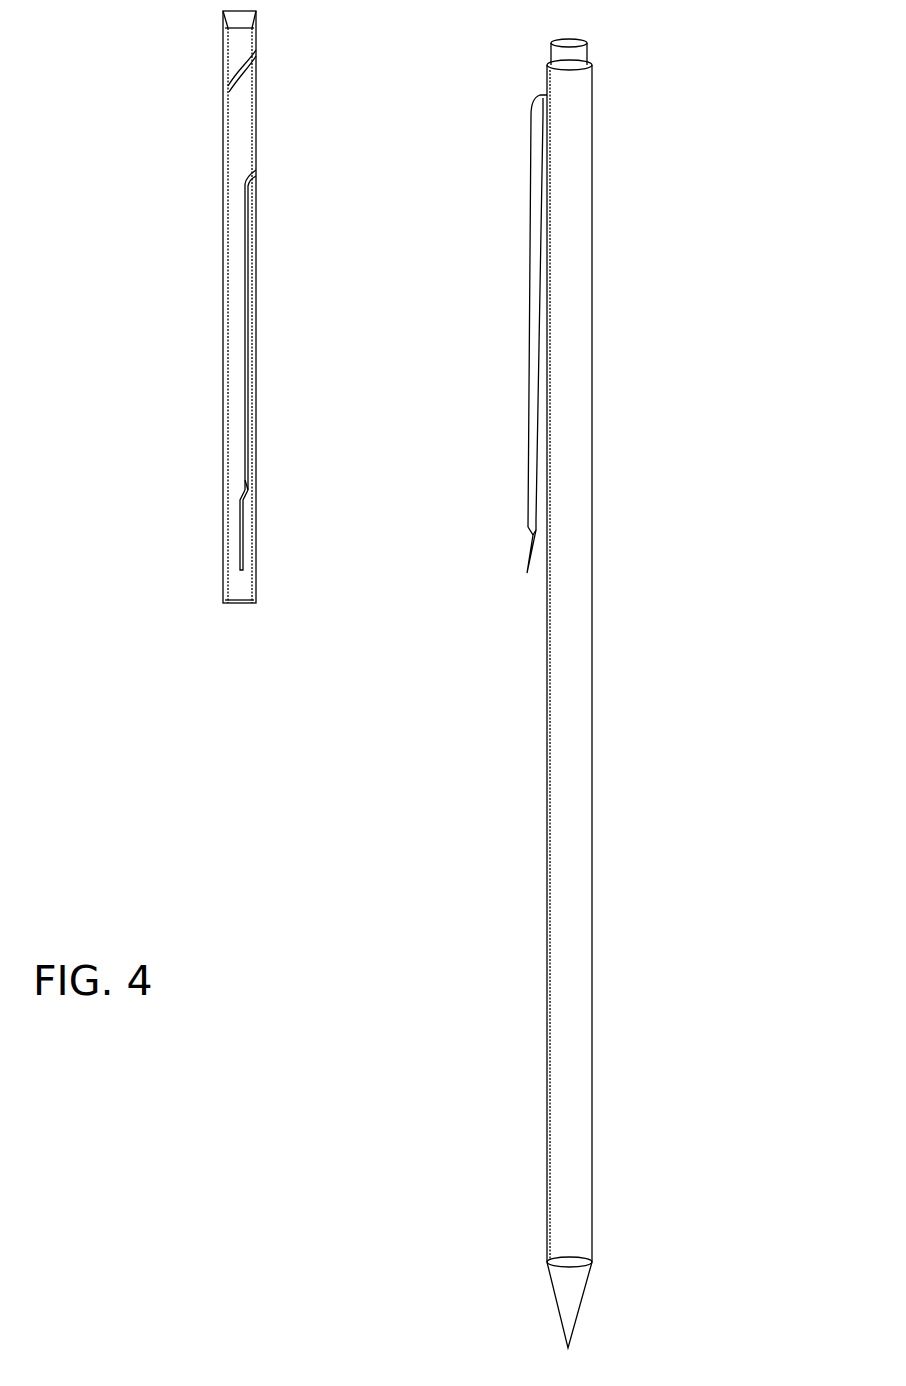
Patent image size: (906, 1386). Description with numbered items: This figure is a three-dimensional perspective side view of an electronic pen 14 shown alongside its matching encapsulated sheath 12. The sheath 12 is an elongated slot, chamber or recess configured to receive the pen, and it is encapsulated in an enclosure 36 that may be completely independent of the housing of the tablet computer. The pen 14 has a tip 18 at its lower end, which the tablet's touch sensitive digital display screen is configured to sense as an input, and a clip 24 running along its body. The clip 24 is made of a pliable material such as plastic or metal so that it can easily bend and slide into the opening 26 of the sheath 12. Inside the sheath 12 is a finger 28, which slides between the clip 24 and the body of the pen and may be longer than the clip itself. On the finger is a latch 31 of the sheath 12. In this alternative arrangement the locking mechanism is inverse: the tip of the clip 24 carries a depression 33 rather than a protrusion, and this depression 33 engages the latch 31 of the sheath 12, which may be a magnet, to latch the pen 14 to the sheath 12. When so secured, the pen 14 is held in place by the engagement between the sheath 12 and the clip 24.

The sheath 12 is at (247, 148).
The opening 26 is at (260, 107).
The finger 28 is at (252, 357).
The latch 31 is at (240, 490).
The enclosure 36 is at (178, 635).
The electronic pen 14 is at (638, 870).
The tip 18 is at (588, 1310).
The clip 24 is at (528, 407).
The depression 33 is at (527, 528).